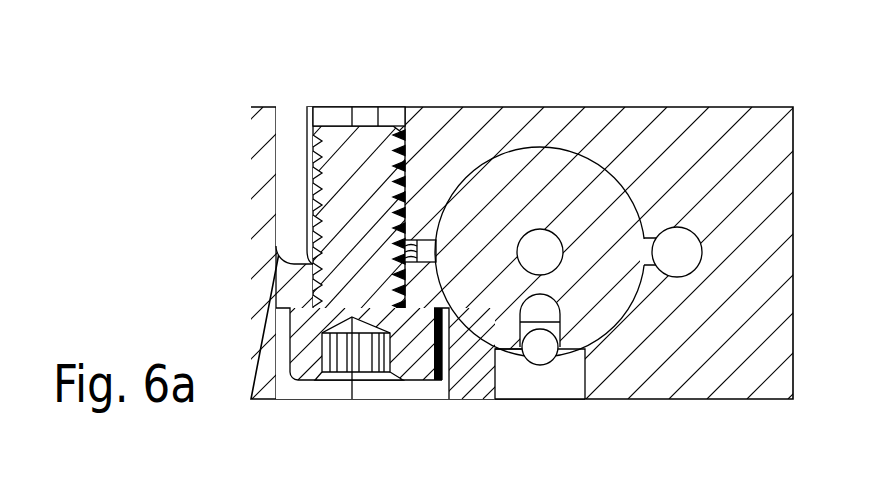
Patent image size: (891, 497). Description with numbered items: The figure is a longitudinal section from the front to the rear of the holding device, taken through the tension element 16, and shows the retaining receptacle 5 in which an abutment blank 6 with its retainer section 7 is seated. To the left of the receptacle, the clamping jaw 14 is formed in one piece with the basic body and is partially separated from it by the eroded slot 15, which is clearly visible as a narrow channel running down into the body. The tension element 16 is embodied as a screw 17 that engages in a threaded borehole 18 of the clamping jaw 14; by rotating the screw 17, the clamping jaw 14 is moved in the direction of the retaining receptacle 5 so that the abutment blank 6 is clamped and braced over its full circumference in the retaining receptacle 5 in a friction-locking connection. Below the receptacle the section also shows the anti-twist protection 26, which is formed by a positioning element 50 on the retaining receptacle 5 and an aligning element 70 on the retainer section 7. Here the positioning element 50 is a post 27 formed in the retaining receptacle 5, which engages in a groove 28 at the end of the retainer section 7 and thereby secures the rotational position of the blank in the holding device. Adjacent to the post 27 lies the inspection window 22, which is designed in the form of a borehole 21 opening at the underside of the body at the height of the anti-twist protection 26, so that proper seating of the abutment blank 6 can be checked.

The retaining receptacle 5 is at (574, 200).
The abutment blank 6 is at (568, 202).
The retainer section 7 is at (565, 192).
The clamping jaw 14 is at (455, 133).
The eroded slot 15 is at (285, 187).
The tension element 16 is at (308, 367).
The screw 17 is at (363, 147).
The threaded borehole 18 is at (325, 118).
The borehole 21 is at (550, 399).
The inspection window 22 is at (572, 382).
The anti-twist protection 26 is at (518, 375).
The post 27 is at (695, 344).
The positioning element 50 is at (543, 338).
The groove 28 is at (694, 284).
The aligning element 70 is at (545, 305).